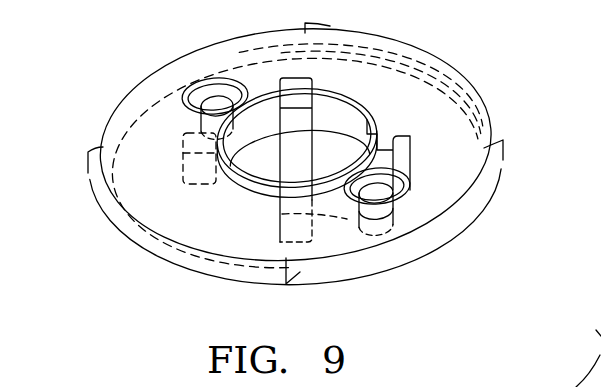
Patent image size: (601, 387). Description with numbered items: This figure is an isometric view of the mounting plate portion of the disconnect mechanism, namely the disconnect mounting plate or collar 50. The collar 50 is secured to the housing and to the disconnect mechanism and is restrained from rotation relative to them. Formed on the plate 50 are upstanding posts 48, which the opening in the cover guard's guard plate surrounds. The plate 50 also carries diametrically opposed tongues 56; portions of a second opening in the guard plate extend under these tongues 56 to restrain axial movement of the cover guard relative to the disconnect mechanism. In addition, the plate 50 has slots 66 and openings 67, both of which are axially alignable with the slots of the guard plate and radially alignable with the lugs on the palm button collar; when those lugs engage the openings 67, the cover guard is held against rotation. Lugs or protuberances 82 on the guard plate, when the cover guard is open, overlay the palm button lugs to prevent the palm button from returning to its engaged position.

The upstanding posts 48 is at (355, 100).
The disconnect mounting plate or collar 50 is at (495, 122).
The tongues 56 is at (473, 92).
The slots 66 is at (484, 147).
The openings 67 is at (278, 183).
The lugs or protuberances 82 is at (252, 131).